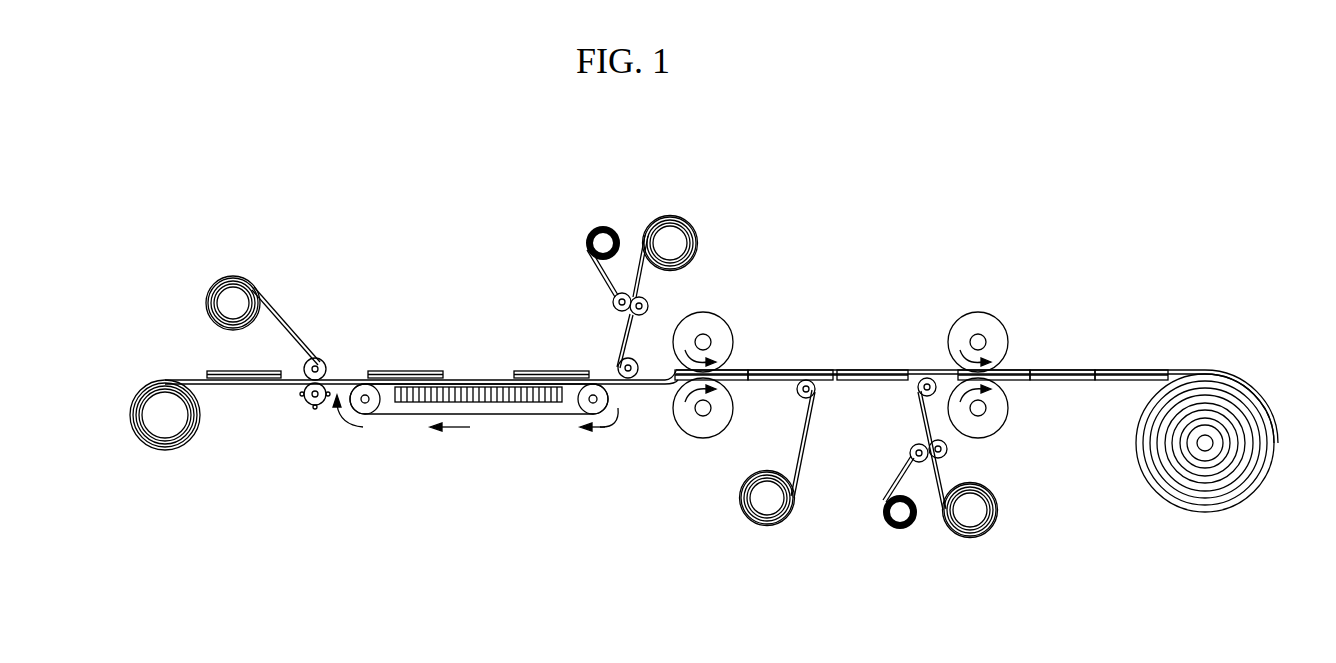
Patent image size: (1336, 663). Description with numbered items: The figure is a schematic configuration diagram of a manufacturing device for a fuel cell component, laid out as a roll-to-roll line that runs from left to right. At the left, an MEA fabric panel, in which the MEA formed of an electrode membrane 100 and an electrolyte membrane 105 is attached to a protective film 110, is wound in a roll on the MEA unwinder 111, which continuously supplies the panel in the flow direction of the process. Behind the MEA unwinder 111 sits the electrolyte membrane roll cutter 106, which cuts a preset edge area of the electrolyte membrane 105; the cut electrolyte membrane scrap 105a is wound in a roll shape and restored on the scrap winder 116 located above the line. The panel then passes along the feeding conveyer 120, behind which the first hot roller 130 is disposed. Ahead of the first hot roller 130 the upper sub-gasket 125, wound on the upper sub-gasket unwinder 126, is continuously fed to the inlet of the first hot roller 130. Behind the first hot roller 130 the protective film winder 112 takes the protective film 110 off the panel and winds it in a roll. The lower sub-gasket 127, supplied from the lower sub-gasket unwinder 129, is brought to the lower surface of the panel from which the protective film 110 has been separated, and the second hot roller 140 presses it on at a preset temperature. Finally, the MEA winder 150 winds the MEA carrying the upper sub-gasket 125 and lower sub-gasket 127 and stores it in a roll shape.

The electrode membrane 100 is at (198, 363).
The electrolyte membrane 105 is at (921, 375).
The electrolyte membrane scrap 105a is at (290, 326).
The electrolyte membrane roll cutter 106 is at (306, 408).
The protective film 110 is at (256, 386).
The MEA unwinder 111 is at (166, 452).
The protective film winder 112 is at (763, 542).
The scrap winder 116 is at (248, 279).
The feeding conveyer 120 is at (507, 430).
The upper sub-gasket 125 is at (620, 337).
The upper sub-gasket unwinder 126 is at (696, 236).
The lower sub-gasket 127 is at (920, 410).
The lower sub-gasket unwinder 129 is at (969, 550).
The first hot roller 130 is at (745, 429).
The second hot roller 140 is at (1020, 429).
The MEA winder 150 is at (1204, 532).